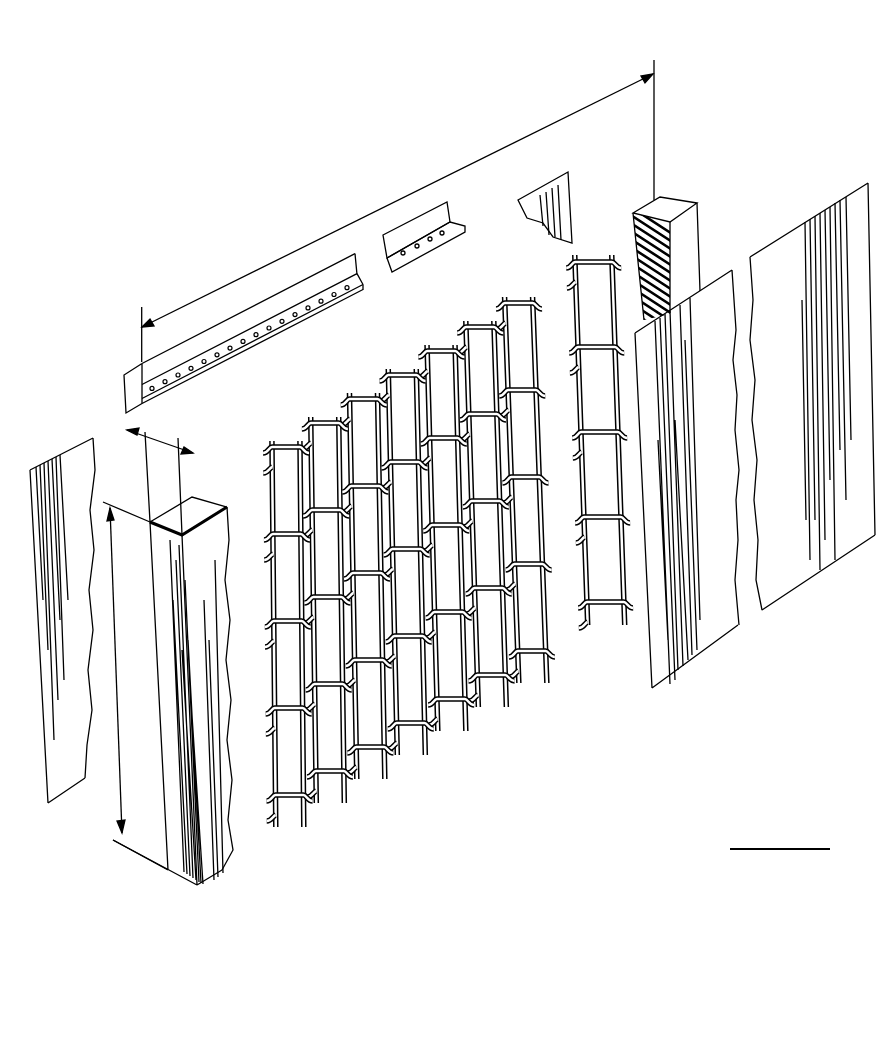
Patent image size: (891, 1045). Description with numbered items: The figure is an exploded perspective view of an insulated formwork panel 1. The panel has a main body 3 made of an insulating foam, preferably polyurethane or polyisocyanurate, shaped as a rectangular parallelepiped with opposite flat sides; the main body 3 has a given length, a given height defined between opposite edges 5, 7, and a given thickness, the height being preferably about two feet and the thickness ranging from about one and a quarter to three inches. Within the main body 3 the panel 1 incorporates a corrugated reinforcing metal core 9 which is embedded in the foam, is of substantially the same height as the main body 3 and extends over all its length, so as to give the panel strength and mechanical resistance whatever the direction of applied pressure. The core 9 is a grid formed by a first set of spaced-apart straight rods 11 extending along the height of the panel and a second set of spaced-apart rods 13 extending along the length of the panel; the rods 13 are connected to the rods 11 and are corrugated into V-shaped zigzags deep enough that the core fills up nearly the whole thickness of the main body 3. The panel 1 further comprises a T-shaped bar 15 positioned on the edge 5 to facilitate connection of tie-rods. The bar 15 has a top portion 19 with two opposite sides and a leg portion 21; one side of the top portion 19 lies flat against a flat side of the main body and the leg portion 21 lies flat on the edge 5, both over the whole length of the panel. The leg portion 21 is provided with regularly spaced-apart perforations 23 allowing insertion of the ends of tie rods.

The insulated formwork panel 1 is at (783, 138).
The main body 3 is at (704, 216).
The edge 5 is at (671, 206).
The edge 7 is at (222, 870).
The corrugated reinforcing metal core 9 is at (550, 621).
The straight rods 11 is at (392, 715).
The corrugated rods 13 is at (517, 305).
The T-shaped bar 15 is at (447, 207).
The top portion 19 is at (249, 308).
The leg portion 21 is at (357, 270).
The perforations 23 is at (168, 383).